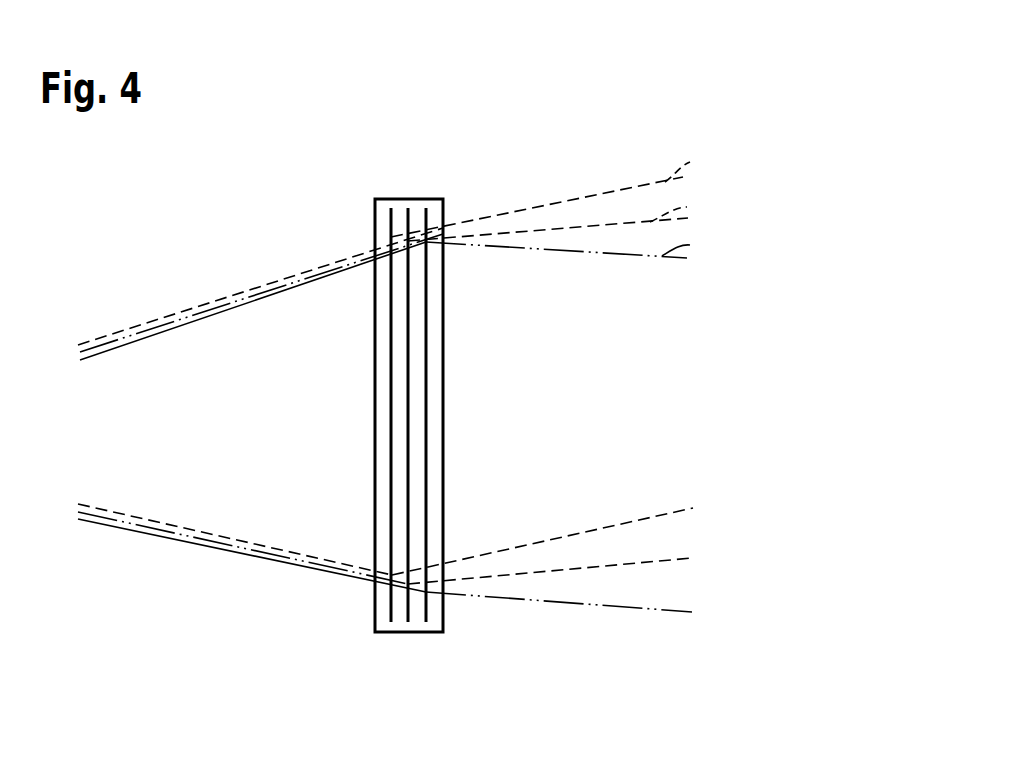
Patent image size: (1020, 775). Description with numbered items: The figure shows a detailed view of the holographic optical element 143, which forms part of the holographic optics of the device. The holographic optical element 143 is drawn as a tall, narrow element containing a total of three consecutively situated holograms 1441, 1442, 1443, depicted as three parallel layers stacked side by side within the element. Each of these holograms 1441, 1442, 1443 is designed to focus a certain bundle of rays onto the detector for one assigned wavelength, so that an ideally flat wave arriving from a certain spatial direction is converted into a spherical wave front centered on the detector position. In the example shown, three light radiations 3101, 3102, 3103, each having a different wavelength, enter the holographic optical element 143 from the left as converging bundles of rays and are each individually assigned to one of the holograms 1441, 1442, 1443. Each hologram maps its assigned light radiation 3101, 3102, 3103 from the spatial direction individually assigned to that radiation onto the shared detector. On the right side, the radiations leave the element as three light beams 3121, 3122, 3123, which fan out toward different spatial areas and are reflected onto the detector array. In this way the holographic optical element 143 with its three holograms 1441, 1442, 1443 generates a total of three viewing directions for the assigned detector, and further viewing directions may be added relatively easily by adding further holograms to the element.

The holographic optical element 143 is at (375, 212).
The first hologram 1441 is at (428, 612).
The second hologram 1442 is at (408, 610).
The third hologram 1443 is at (391, 613).
The first light radiation 3101 is at (596, 255).
The second light radiation 3102 is at (629, 221).
The third light radiation 3103 is at (557, 200).
The first light beam 3121 is at (690, 245).
The second light beam 3122 is at (687, 207).
The third light beam 3123 is at (690, 162).